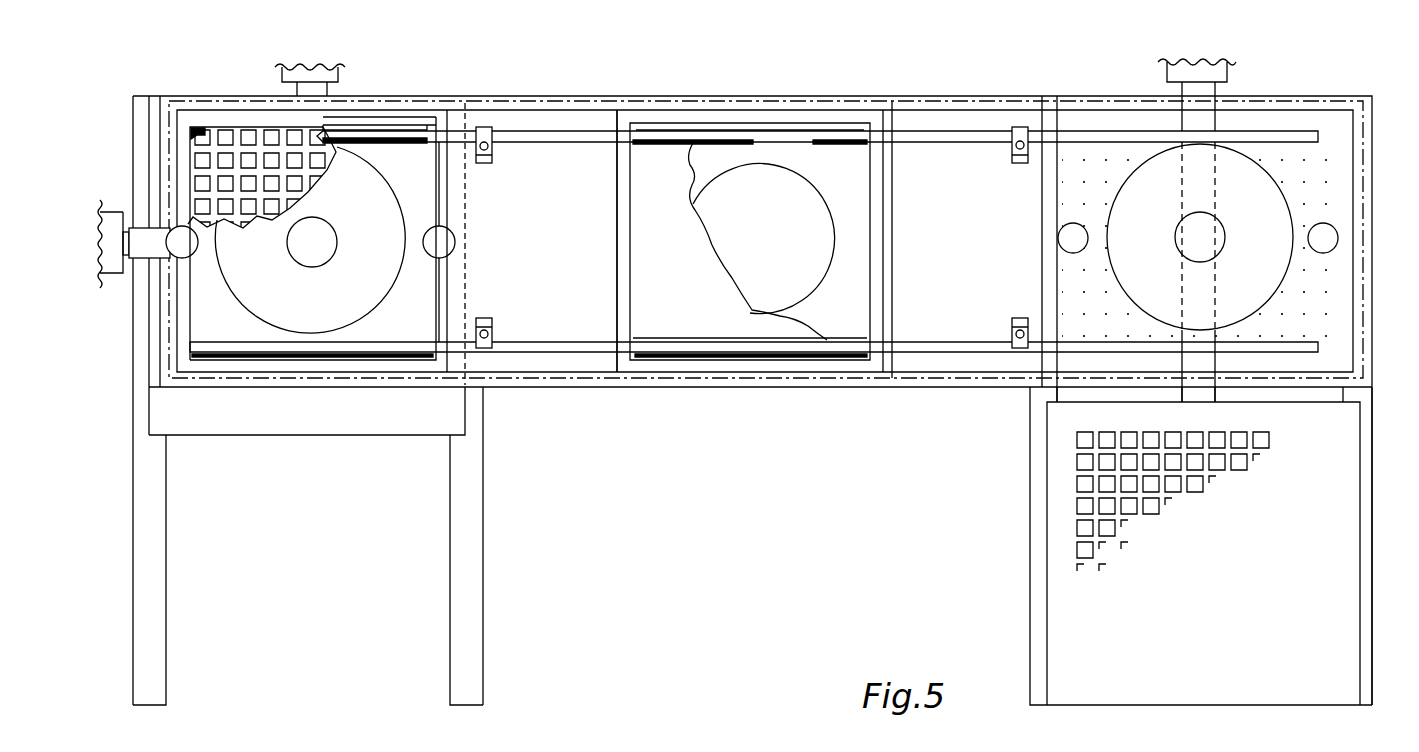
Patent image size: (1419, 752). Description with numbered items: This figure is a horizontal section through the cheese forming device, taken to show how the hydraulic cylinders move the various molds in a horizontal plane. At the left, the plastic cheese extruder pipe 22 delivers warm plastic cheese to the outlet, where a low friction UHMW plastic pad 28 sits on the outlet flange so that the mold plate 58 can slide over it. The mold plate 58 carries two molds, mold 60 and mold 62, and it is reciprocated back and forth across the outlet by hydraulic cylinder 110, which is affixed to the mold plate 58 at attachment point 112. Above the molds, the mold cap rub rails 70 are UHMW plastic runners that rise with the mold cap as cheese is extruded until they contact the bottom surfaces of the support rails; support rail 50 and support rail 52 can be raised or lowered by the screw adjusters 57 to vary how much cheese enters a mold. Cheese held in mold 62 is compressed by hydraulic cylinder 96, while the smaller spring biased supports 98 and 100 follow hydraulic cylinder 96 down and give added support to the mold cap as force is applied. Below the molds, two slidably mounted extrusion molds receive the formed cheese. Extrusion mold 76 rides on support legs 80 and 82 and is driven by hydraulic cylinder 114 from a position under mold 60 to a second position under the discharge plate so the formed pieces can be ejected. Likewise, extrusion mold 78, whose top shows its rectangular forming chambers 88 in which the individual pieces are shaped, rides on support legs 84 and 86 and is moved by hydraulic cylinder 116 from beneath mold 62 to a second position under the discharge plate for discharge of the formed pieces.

The hydraulic cylinder 110 is at (108, 212).
The attachment point 112 is at (152, 96).
The extrusion mold 76 is at (214, 127).
The forming chambers 88 is at (247, 135).
The hydraulic cylinder 114 is at (310, 73).
The mold 60 is at (358, 117).
The mold cap rub rails 70 is at (653, 500).
The screw adjusters 57 is at (918, 500).
The support rail 52 is at (518, 131).
The support rail 50 is at (557, 352).
The mold 62 is at (702, 113).
The plastic cheese extruder pipe 22 is at (737, 215).
The low friction UHMW plastic pad 28 is at (840, 208).
The mold plate 58 is at (588, 232).
The hydraulic cylinder 96 is at (1133, 227).
The spring biased support 98 is at (1073, 232).
The spring biased support 100 is at (1324, 222).
The hydraulic cylinder 116 is at (1193, 73).
The support leg 80 is at (166, 462).
The support leg 82 is at (450, 462).
The support leg 84 is at (1030, 460).
The extrusion mold 78 is at (1060, 472).
The support leg 86 is at (1373, 460).